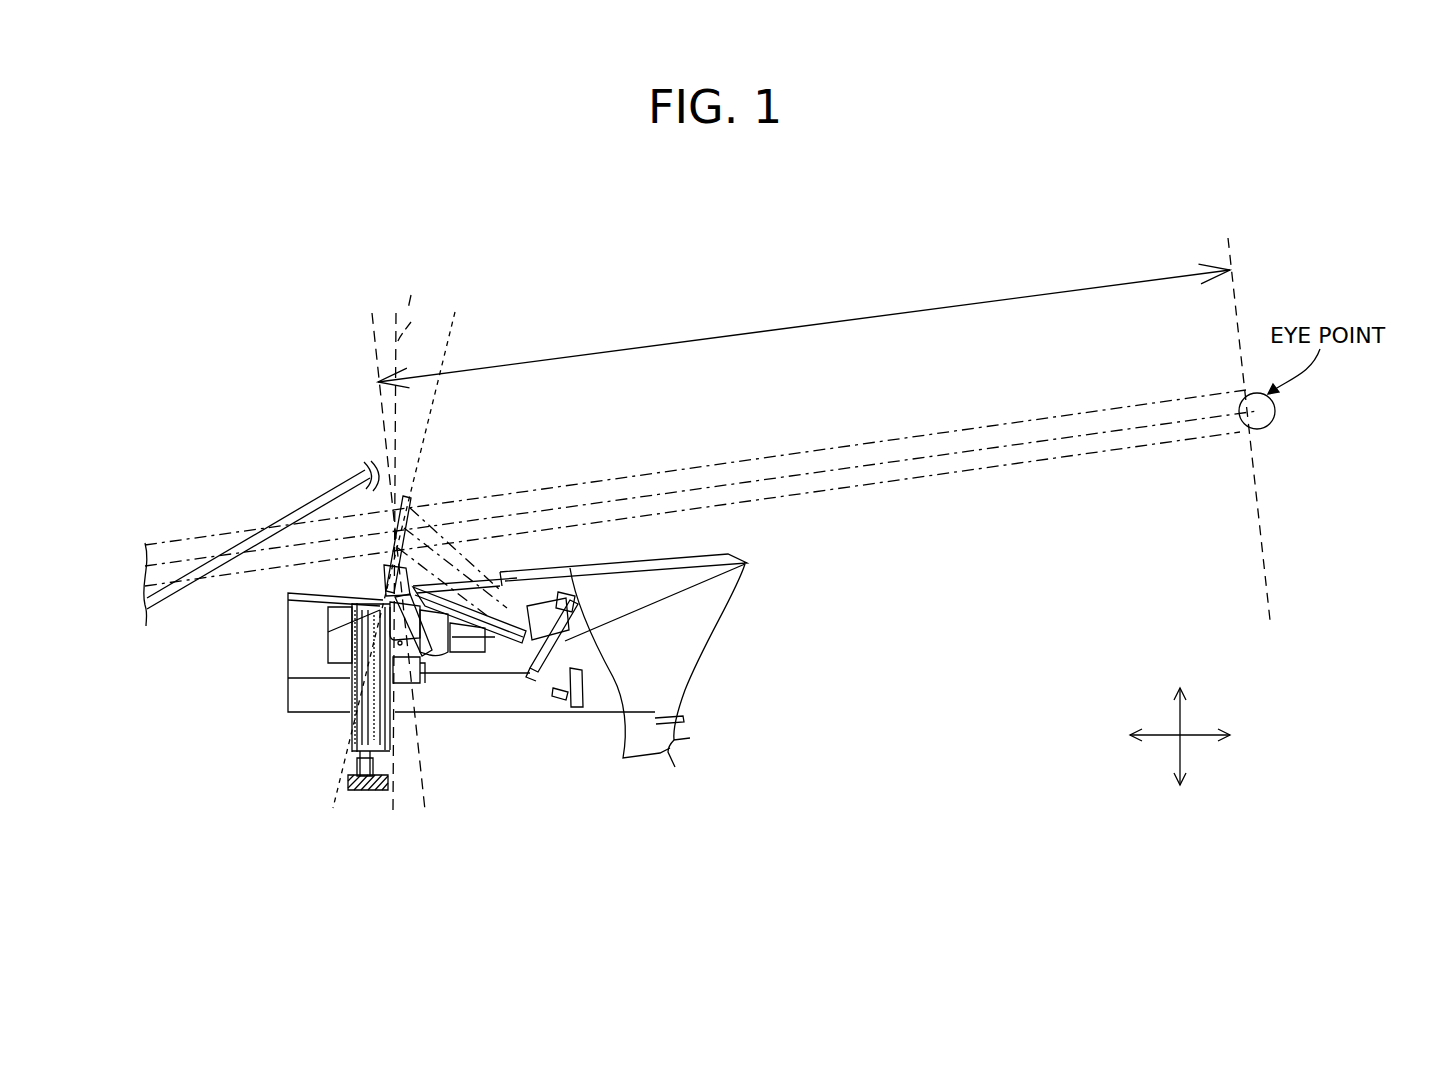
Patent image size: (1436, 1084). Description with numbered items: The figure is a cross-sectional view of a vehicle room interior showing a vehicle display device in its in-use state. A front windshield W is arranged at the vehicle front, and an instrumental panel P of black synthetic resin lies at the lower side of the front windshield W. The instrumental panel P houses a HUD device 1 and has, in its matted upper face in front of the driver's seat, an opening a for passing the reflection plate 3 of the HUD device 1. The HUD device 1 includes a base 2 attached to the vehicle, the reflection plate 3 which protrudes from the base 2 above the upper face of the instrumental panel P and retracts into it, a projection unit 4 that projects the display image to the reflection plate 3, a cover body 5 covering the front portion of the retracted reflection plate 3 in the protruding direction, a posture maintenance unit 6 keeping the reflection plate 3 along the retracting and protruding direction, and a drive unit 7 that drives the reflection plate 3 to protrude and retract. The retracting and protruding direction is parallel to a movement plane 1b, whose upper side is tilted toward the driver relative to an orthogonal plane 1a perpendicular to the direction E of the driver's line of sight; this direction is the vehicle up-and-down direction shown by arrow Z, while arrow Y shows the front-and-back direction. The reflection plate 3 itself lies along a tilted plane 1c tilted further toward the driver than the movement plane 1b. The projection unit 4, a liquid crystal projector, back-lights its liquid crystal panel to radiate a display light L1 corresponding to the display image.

The HUD device 1 is at (1168, 209).
The orthogonal plane 1a is at (372, 338).
The movement plane 1b is at (413, 282).
The tilted plane 1c is at (453, 345).
The base 2 is at (353, 713).
The reflection plate 3 is at (414, 496).
The projection unit 4 is at (545, 658).
The cover body 5 is at (478, 628).
The posture maintenance unit 6 is at (370, 698).
The drive unit 7 is at (357, 793).
The direction of a line of sight E is at (1077, 283).
The front windshield W is at (321, 492).
The instrumental panel P is at (695, 553).
The opening a is at (513, 570).
The display light L1 is at (480, 556).
The Z direction Z is at (1183, 712).
The Y direction Y is at (1200, 738).